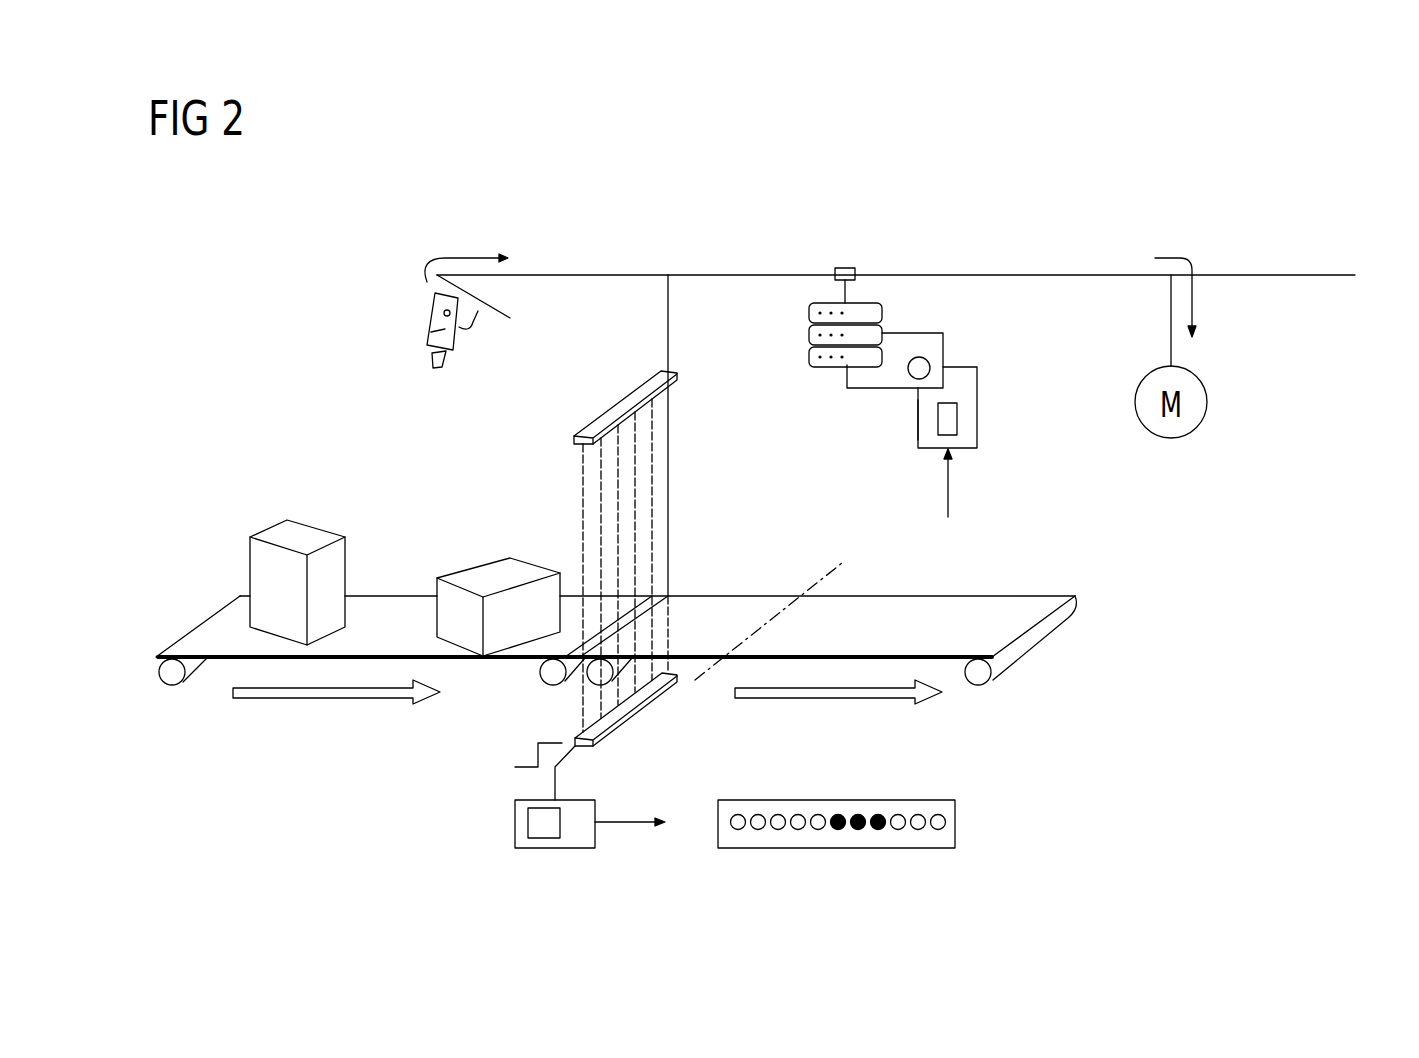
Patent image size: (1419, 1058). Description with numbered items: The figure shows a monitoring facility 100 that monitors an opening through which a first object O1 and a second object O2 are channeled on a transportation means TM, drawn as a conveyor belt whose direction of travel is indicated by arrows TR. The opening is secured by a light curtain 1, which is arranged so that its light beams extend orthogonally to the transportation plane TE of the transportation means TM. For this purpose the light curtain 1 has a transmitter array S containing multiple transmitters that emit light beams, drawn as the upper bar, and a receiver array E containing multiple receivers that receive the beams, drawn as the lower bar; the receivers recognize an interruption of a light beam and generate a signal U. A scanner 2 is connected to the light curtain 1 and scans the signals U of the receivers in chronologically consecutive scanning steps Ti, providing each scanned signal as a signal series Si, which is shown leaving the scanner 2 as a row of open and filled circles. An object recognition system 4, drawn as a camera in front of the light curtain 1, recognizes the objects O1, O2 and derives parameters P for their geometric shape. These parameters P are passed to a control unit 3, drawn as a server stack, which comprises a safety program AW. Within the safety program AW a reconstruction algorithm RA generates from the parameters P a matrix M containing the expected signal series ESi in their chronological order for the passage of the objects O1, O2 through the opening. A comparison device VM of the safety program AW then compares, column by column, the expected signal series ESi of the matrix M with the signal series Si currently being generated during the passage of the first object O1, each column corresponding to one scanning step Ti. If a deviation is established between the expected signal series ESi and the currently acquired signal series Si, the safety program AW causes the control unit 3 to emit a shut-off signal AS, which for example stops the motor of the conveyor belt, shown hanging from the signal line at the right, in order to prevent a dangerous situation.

The monitoring facility 100 is at (579, 222).
The light curtain 1 is at (694, 483).
The scanner 2 is at (515, 822).
The control unit 3 is at (868, 303).
The object recognition system 4 is at (430, 333).
The parameters P is at (457, 255).
The transmitter array S is at (607, 418).
The receiver array E is at (611, 719).
The safety program AW is at (900, 333).
The comparison device VM is at (962, 366).
The reconstruction algorithm RA is at (926, 374).
The matrix M is at (918, 418).
The expected signal series ESi is at (957, 430).
The signal series Si is at (950, 488).
The shut-off signal AS is at (1167, 258).
The transportation means TM is at (208, 640).
The first object O1 is at (495, 578).
The second object O2 is at (291, 530).
The transport direction TR is at (323, 692).
The transportation plane TE is at (804, 590).
The signal U is at (556, 745).
The scanning steps Ti is at (535, 820).